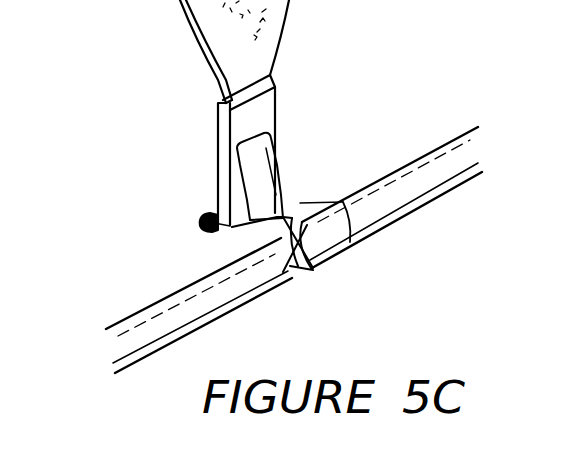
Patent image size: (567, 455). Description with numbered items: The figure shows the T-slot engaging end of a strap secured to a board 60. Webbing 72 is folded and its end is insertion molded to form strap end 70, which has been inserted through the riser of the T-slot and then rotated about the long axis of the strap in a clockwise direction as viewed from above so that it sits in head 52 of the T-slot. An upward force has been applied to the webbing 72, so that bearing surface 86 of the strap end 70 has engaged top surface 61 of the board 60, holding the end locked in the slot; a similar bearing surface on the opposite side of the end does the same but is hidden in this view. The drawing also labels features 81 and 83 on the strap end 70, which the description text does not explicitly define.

The webbing 72 is at (210, 27).
The strap end 70 is at (222, 125).
The block upper edge 81 is at (268, 146).
The latch tab 83 is at (273, 188).
The head 52 is at (207, 220).
The bearing surface 86 is at (232, 228).
The board 60 is at (410, 202).
The top surface 61 is at (349, 228).